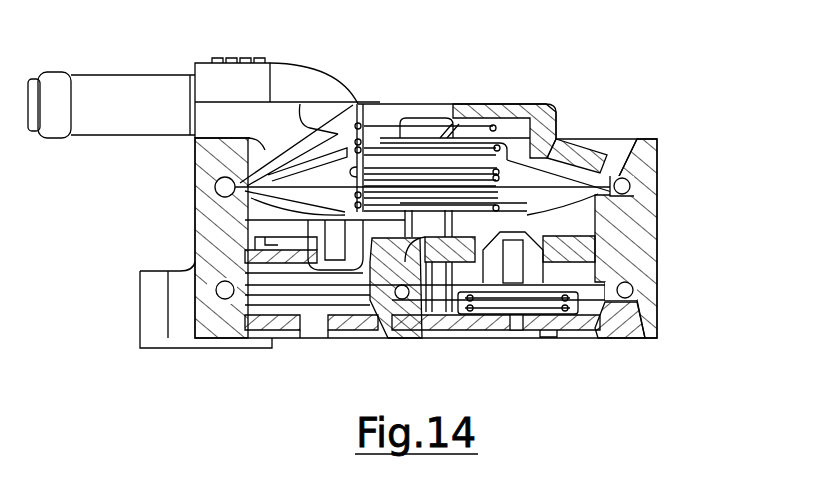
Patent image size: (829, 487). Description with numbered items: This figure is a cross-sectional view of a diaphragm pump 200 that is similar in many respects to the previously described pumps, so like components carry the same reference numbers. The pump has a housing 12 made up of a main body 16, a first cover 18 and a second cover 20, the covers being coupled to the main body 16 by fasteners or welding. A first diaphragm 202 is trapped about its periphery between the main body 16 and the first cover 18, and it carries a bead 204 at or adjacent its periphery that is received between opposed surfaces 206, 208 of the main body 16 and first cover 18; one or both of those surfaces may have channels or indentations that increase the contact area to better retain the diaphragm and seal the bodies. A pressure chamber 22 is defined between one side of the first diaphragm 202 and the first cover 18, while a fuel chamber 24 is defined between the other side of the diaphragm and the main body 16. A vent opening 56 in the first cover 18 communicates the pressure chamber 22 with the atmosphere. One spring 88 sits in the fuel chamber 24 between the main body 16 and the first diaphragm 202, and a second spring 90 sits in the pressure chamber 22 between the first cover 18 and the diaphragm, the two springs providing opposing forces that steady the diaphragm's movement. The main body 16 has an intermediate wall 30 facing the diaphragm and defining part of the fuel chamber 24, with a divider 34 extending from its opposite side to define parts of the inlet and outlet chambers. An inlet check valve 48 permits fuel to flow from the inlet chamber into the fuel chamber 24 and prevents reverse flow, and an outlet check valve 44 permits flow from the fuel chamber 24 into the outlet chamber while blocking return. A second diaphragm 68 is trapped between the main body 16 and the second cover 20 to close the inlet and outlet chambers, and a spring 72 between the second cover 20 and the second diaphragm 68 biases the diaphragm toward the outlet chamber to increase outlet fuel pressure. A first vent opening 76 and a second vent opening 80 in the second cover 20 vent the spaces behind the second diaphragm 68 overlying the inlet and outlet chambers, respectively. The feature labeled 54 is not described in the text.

The diaphragm pump 200 is at (700, 43).
The housing 12 is at (671, 154).
The main body 16 is at (643, 230).
The first cover 18 is at (532, 110).
The pressure chamber 22 is at (517, 138).
The inlet passage 54 is at (202, 174).
The opposed surface 208 is at (205, 184).
The opposed surface 206 is at (200, 199).
The spring 88 is at (300, 224).
The fuel chamber 24 is at (285, 224).
The inlet check valve 48 is at (303, 248).
The second spring 90 is at (380, 152).
The vent opening 56 is at (424, 137).
The first diaphragm 202 is at (547, 168).
The bead 204 is at (624, 182).
The intermediate wall 30 is at (632, 195).
The divider 34 is at (372, 278).
The outlet check valve 44 is at (533, 273).
The second diaphragm 68 is at (585, 300).
The second cover 20 is at (563, 323).
The first vent opening 76 is at (330, 325).
The second vent opening 80 is at (515, 325).
The spring 72 is at (478, 310).